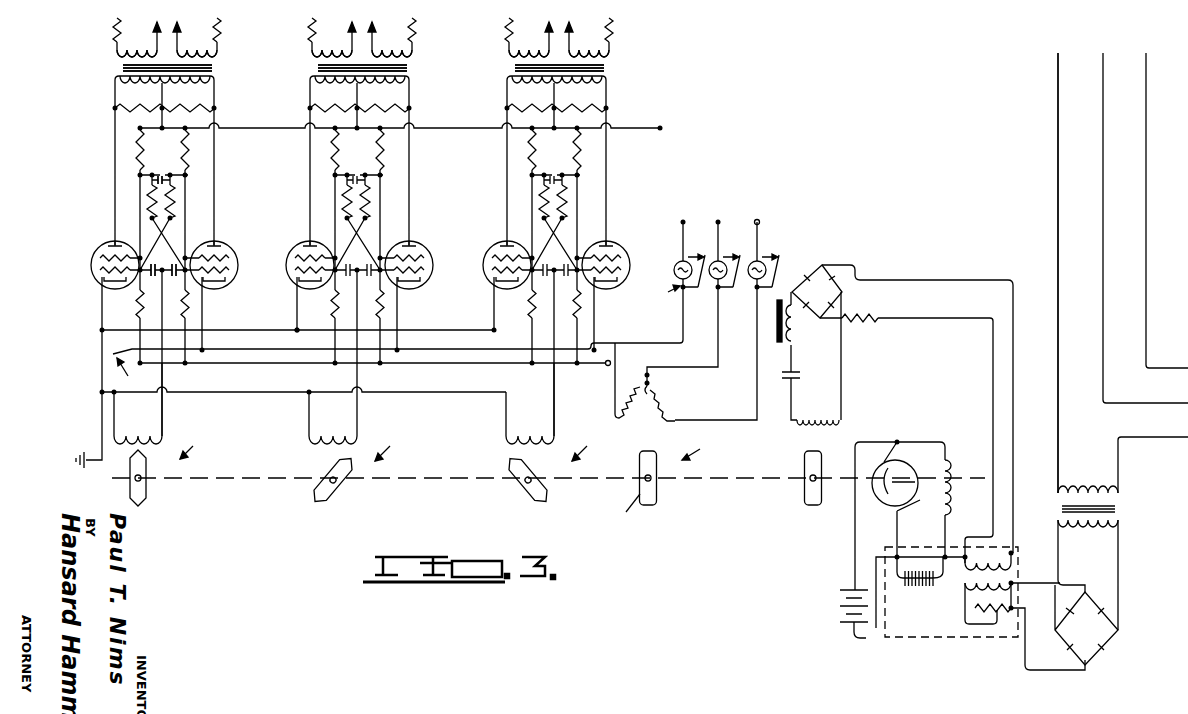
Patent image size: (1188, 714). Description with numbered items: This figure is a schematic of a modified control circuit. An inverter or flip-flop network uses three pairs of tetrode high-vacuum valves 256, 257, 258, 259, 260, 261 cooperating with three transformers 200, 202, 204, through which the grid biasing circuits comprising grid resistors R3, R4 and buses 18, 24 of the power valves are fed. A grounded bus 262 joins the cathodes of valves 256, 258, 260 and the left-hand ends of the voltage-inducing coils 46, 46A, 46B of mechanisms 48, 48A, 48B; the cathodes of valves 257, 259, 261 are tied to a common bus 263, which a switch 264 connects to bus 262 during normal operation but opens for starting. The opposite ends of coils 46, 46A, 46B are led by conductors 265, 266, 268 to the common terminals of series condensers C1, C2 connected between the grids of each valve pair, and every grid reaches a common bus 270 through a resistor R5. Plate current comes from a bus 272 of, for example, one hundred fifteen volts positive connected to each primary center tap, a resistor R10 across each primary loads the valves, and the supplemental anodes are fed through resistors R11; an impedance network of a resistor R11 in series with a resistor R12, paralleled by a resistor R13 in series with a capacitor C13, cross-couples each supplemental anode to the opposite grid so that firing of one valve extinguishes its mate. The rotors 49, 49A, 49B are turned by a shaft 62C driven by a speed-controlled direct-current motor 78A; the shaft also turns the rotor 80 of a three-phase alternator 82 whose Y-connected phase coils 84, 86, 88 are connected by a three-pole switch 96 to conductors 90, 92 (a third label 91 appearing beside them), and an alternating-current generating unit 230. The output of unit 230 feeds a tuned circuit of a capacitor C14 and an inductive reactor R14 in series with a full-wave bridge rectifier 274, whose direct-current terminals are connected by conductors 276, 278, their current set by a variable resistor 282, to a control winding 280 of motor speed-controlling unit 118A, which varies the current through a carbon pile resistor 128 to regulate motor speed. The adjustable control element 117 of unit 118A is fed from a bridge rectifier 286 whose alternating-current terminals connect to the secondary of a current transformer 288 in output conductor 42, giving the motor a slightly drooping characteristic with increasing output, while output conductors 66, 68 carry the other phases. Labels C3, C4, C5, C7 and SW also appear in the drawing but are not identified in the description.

The grid resistor R3 is at (113, 28).
The grid resistor R4 is at (222, 30).
The bus 18 is at (137, 39).
The bus 24 is at (197, 39).
The pickup coil C3 is at (332, 38).
The pickup coil C4 is at (392, 38).
The pickup coil C5 is at (529, 38).
The pickup coil C7 is at (589, 38).
The transformer 200 is at (114, 68).
The transformer 202 is at (312, 76).
The transformer 204 is at (512, 66).
The bus 272 is at (288, 128).
The resistor R10 is at (122, 110).
The resistor R11 is at (613, 150).
The resistor R12 is at (148, 198).
The resistor R13 is at (162, 212).
The capacitor C13 is at (152, 180).
The tetrode electronic high vacuum valve 256 is at (104, 248).
The tetrode electronic high vacuum valve 257 is at (216, 246).
The tetrode electronic high vacuum valve 258 is at (298, 247).
The tetrode electronic high vacuum valve 259 is at (423, 246).
The tetrode electronic high vacuum valve 260 is at (497, 247).
The tetrode electronic high vacuum valve 261 is at (597, 244).
The condenser C1 is at (350, 275).
The condenser C2 is at (175, 280).
The resistor R5 is at (139, 309).
The grounded bus 262 is at (237, 328).
The common bus 263 is at (236, 350).
The switch 264 is at (131, 374).
The conductor 265 is at (165, 390).
The conductor 266 is at (360, 390).
The conductor 268 is at (556, 373).
The common bus 270 is at (262, 392).
The voltage-inducing coil 46 is at (138, 432).
The voltage-inducing coil 46A is at (334, 433).
The voltage-inducing coil 46B is at (532, 433).
The voltage-inducing mechanism 48 is at (195, 444).
The voltage-inducing mechanism 48A is at (395, 445).
The voltage-inducing mechanism 48B is at (592, 445).
The rotor 49 is at (149, 496).
The rotor 49A is at (348, 496).
The rotor 49B is at (560, 494).
The flux-inducing member or rotor 80 is at (659, 498).
The three-phase alternator 82 is at (700, 447).
The shaft 62C is at (618, 508).
The alternating current generating unit 230 is at (800, 492).
The conductor 90 is at (685, 222).
The indicator lamp 91 is at (720, 222).
The conductor 92 is at (759, 222).
The three-pole switch 96 is at (661, 293).
The phase coil 84 is at (627, 380).
The phase coil 86 is at (668, 411).
The phase coil 88 is at (654, 380).
The full wave bridge rectifier 274 is at (834, 263).
The conductor 276 is at (944, 282).
The conductor 278 is at (922, 318).
The variable resistor 282 is at (864, 322).
The inductive reactor R14 is at (790, 331).
The capacitor C14 is at (797, 372).
The speed-controlled direct-current motor 78A is at (931, 441).
The switch SW is at (901, 610).
The carbon pile resistor 128 is at (910, 587).
The motor speed-controlling unit 118A is at (937, 641).
The control winding 280 is at (1011, 558).
The adjustable control element 117 is at (1013, 582).
The current transformer 288 is at (1118, 515).
The full wave bridge-type rectifier 286 is at (1112, 640).
The conductor 42 is at (1060, 178).
The conductor 66 is at (1103, 178).
The conductor 68 is at (1146, 140).